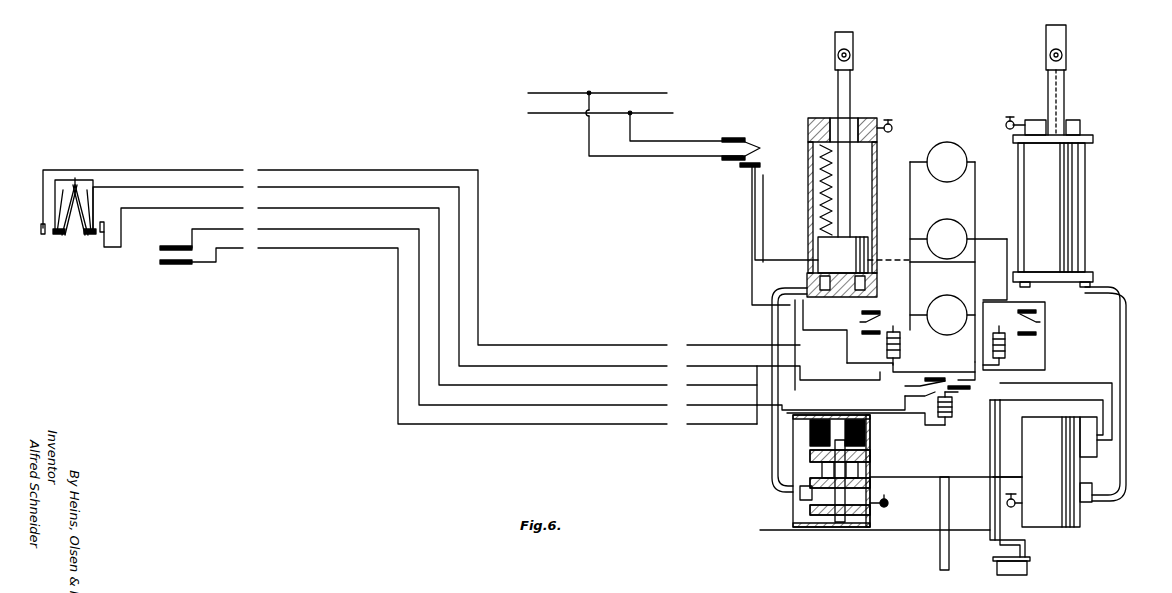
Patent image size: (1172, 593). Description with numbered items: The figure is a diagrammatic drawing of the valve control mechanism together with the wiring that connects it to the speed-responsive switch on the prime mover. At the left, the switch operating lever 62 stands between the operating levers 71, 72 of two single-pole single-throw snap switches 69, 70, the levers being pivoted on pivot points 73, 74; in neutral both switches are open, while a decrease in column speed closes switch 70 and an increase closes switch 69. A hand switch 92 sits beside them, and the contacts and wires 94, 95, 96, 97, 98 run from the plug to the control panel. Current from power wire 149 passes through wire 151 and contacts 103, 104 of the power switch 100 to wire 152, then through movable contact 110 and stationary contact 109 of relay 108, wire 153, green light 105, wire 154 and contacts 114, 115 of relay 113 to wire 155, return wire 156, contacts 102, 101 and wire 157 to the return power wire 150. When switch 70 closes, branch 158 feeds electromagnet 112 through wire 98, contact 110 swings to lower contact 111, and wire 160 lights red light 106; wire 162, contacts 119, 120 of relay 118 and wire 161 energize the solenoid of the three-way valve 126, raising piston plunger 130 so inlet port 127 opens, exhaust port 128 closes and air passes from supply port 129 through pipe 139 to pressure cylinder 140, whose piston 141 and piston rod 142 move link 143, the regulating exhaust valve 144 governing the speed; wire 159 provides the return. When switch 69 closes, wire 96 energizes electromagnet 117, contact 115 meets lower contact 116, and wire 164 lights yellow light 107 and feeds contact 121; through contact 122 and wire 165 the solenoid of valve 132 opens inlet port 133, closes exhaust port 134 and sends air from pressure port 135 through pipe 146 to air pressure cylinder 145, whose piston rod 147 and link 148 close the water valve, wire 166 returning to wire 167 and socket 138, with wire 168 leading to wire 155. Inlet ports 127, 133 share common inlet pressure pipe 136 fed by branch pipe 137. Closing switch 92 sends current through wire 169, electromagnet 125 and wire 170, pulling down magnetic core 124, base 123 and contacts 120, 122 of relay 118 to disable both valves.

The switch operating lever 62 is at (76, 183).
The snap switch 69 is at (43, 234).
The snap switch 70 is at (103, 233).
The operating lever 71 is at (68, 225).
The operating lever 72 is at (80, 240).
The pivot point 73 is at (60, 235).
The pivot point 74 is at (92, 236).
The single-pole single-throw switch 92 is at (160, 255).
The contact and wire 94 is at (227, 229).
The contact and wire 95 is at (195, 262).
The contact and wire 96 is at (150, 170).
The contact and wire 97 is at (156, 187).
The contact and wire 98 is at (165, 208).
The power switch 100 is at (730, 160).
The contact 101 is at (740, 137).
The contact 102 is at (758, 146).
The contact 103 is at (745, 168).
The contact 104 is at (754, 172).
The green light 105 is at (938, 222).
The red light 106 is at (937, 146).
The yellow light 107 is at (950, 294).
The double-pole single-throw relay 108 is at (901, 337).
The stationary contact 109 is at (862, 313).
The movable contact 110 is at (860, 322).
The stationary lower contact 111 is at (862, 333).
The electromagnet 112 is at (901, 352).
The relay 113 is at (1010, 333).
The upper contact 114 is at (1037, 312).
The movable contact 115 is at (1040, 322).
The lower contact 116 is at (1037, 334).
The electromagnet 117 is at (1003, 362).
The double-pole single-throw relay 118 is at (953, 405).
The upper stationary contact 119 is at (940, 372).
The movable contact 120 is at (915, 386).
The upper stationary contact 121 is at (968, 370).
The movable contact 122 is at (970, 388).
The base 123 is at (960, 392).
The magnetic core 124 is at (913, 396).
The electromagnet 125 is at (943, 419).
The solenoid operated three-way valve 126 is at (871, 452).
The inlet port 127 is at (871, 470).
The exhaust port 128 is at (873, 510).
The supply port 129 is at (804, 500).
The piston plunger 130 is at (871, 433).
The valve 132 is at (1028, 445).
The inlet port 133 is at (1020, 472).
The exhaust port 134 is at (1010, 507).
The pressure port 135 is at (1090, 502).
The common inlet pressure pipe 136 is at (925, 477).
The branch pipe 137 is at (949, 510).
The socket 138 is at (1027, 567).
The pipe 139 is at (812, 478).
The pressure cylinder 140 is at (818, 250).
The piston 141 is at (810, 220).
The piston rod 142 is at (826, 176).
The link 143 is at (854, 48).
The regulating exhaust valve 144 is at (891, 126).
The air pressure cylinder 145 is at (1086, 210).
The pipe 146 is at (1126, 373).
The piston rod 147 is at (1066, 88).
The link 148 is at (1067, 48).
The power wire 149 is at (562, 93).
The return power wire 150 is at (560, 113).
The wire 151 is at (628, 156).
The wire 152 is at (752, 237).
The wire 153 is at (910, 274).
The wire 154 is at (1007, 235).
The wire 155 is at (975, 280).
The return wire 156 is at (764, 222).
The wire 157 is at (691, 141).
The branch wire 158 is at (806, 322).
The wire 159 is at (900, 370).
The wire 160 is at (877, 290).
The wire 161 is at (886, 410).
The wire 162 is at (850, 380).
The wire 164 is at (1045, 350).
The wire 165 is at (1055, 383).
The wire 166 is at (1040, 400).
The wire 167 is at (907, 530).
The wire 168 is at (1025, 545).
The wire 169 is at (772, 323).
The wire 170 is at (878, 413).